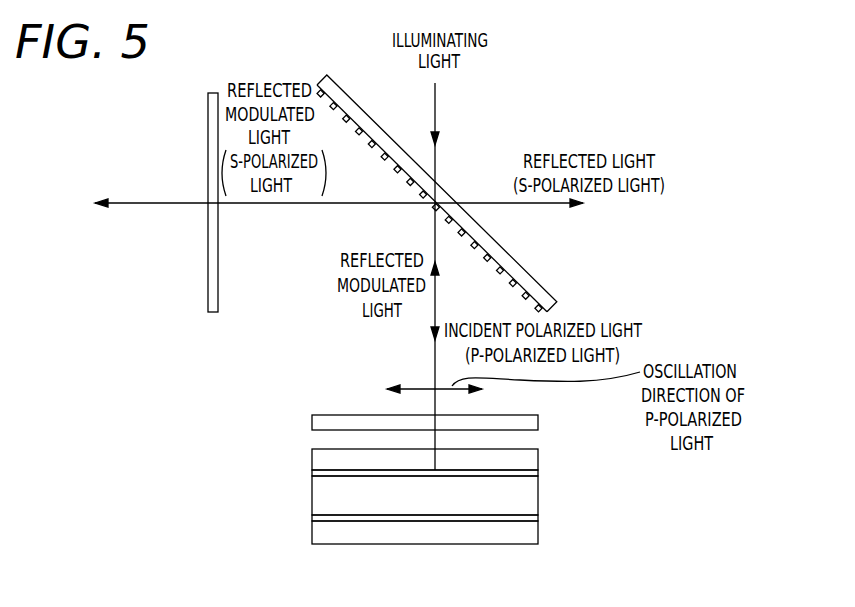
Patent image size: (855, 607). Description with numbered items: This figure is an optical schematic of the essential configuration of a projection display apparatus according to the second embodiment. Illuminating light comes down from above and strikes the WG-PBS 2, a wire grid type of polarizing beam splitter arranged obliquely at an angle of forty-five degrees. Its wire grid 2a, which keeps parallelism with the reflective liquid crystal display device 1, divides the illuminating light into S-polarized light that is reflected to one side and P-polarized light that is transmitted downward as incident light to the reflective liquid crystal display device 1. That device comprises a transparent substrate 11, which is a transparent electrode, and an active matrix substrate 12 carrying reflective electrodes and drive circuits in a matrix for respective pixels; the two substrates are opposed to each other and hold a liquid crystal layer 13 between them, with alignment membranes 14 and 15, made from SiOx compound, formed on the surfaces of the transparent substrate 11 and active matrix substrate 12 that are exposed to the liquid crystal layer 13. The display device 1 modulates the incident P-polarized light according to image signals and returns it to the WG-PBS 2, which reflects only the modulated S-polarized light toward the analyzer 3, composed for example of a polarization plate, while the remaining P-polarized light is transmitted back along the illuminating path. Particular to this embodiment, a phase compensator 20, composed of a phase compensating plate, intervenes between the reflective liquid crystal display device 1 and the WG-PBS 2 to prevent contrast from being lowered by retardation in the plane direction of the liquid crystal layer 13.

The reflective liquid crystal display device 1 is at (424, 498).
The WG-PBS 2 is at (402, 249).
The wire grid 2a is at (400, 168).
The analyzer 3 is at (212, 92).
The transparent substrate 11 is at (321, 460).
The active matrix substrate 12 is at (318, 535).
The liquid crystal layer 13 is at (321, 490).
The alignment membrane 14 is at (318, 473).
The alignment membrane 15 is at (318, 517).
The phase compensator 20 is at (533, 422).